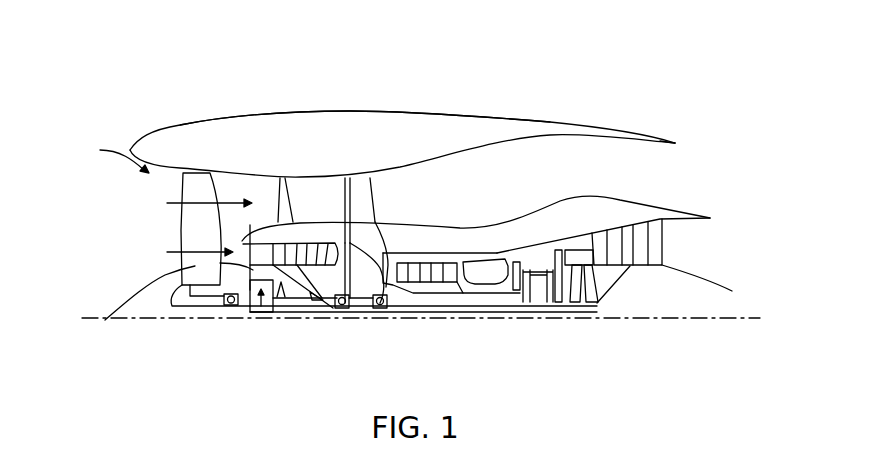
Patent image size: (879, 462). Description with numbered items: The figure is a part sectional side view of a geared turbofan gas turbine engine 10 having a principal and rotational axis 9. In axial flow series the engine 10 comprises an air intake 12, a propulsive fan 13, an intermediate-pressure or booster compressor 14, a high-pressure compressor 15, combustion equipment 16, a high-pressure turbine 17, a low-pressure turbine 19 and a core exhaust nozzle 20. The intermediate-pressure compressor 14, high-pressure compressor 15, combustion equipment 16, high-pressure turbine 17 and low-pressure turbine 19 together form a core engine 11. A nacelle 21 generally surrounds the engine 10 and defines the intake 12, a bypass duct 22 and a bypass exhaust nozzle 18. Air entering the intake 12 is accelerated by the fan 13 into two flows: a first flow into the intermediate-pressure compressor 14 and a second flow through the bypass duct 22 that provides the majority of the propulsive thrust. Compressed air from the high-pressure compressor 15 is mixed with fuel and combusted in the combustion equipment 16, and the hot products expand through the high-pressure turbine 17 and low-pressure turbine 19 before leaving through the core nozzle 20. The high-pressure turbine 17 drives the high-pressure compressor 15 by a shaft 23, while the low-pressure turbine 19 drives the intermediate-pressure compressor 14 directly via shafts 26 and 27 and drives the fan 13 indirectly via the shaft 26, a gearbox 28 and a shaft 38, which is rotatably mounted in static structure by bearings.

The principal and rotational axis 9 is at (636, 319).
The geared turbofan gas turbine engine 10 is at (170, 127).
The core engine 11 is at (478, 231).
The air intake 12 is at (106, 155).
The propulsive fan 13 is at (192, 231).
The intermediate-pressure compressor 14 is at (314, 242).
The high-pressure compressor 15 is at (432, 270).
The combustion equipment 16 is at (490, 274).
The high-pressure turbine 17 is at (537, 262).
The bypass exhaust nozzle 18 is at (645, 160).
The low-pressure turbine 19 is at (640, 235).
The core exhaust nozzle 20 is at (700, 246).
The nacelle 21 is at (380, 120).
The bypass duct 22 is at (359, 183).
The shaft 23 is at (500, 298).
The shaft 26 is at (420, 313).
The shaft 27 is at (295, 312).
The gearbox 28 is at (262, 316).
The shaft 38 is at (205, 310).